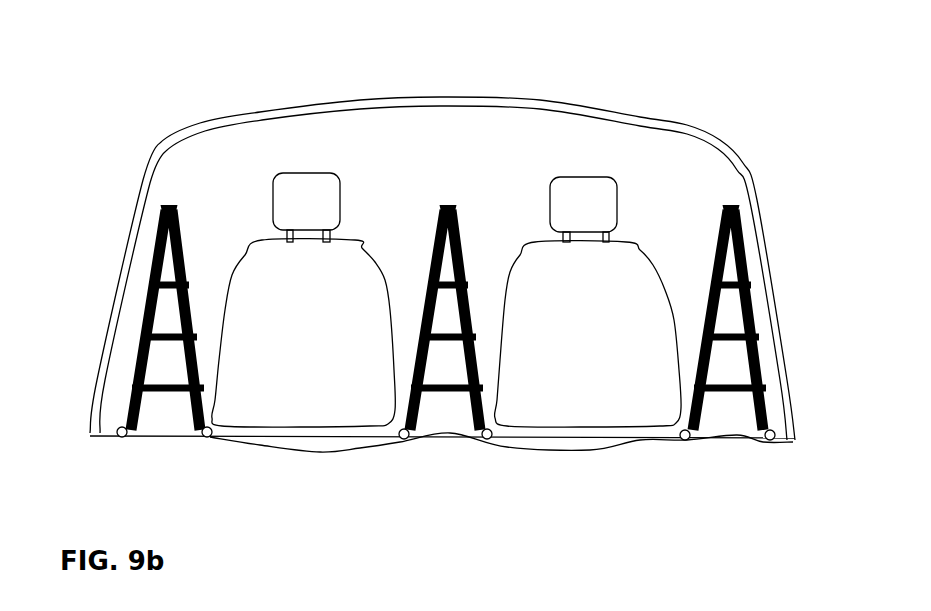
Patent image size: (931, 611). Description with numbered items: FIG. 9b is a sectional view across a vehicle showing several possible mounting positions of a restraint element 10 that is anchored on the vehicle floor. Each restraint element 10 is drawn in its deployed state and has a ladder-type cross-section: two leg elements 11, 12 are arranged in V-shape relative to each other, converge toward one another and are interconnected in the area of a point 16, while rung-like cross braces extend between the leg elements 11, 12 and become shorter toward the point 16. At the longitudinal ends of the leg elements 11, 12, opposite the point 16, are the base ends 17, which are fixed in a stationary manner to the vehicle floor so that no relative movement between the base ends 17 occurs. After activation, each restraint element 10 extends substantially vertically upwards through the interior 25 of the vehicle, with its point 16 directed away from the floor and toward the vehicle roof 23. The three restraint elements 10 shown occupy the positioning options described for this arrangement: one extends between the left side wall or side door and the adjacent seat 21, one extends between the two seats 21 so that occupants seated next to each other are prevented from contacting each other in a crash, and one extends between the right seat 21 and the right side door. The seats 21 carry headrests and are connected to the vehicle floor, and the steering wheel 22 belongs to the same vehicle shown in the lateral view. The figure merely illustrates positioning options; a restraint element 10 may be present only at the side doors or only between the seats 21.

The restraint element 10 is at (128, 350).
The leg element 11 is at (456, 240).
The leg element 12 is at (173, 233).
The point 16 is at (167, 207).
The base ends 17 is at (122, 437).
The seats 21 is at (350, 257).
The steering wheel 22 is at (272, 215).
The vehicle roof 23 is at (587, 107).
The interior 25 is at (515, 190).